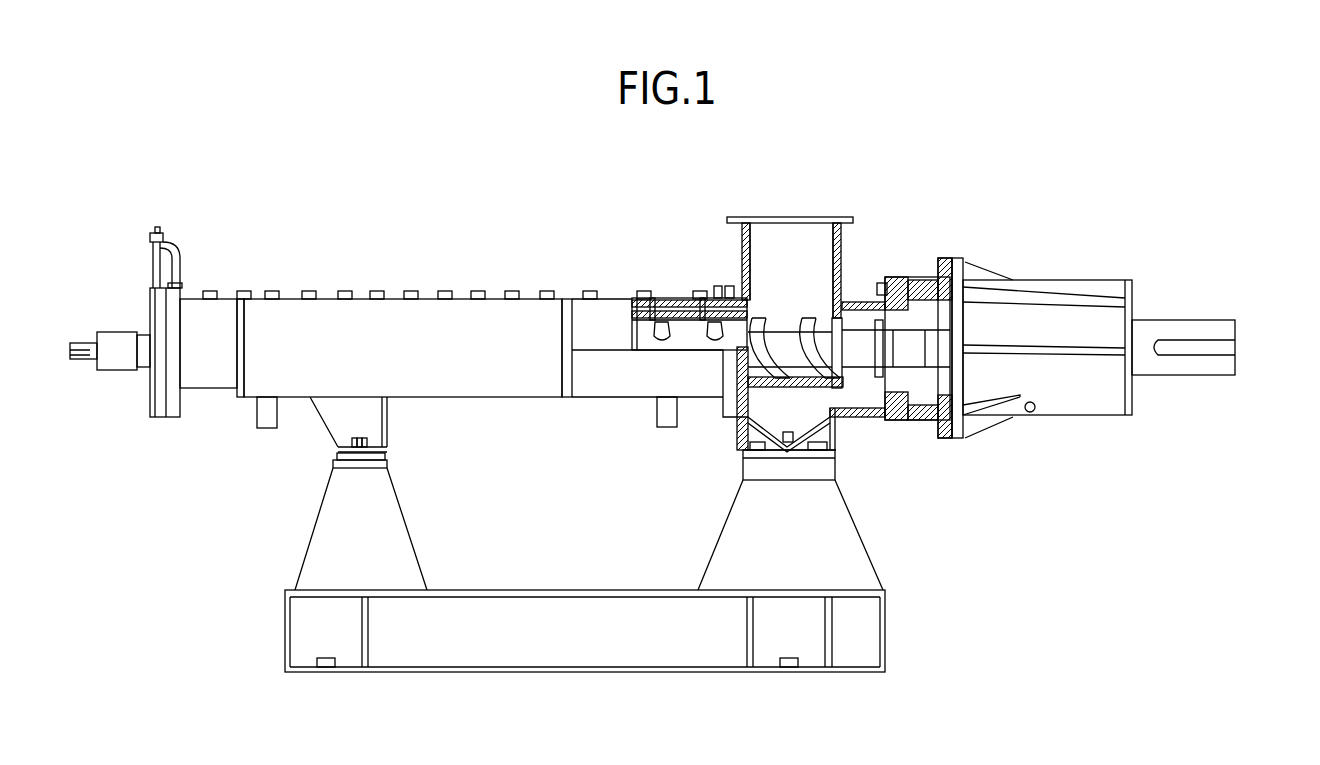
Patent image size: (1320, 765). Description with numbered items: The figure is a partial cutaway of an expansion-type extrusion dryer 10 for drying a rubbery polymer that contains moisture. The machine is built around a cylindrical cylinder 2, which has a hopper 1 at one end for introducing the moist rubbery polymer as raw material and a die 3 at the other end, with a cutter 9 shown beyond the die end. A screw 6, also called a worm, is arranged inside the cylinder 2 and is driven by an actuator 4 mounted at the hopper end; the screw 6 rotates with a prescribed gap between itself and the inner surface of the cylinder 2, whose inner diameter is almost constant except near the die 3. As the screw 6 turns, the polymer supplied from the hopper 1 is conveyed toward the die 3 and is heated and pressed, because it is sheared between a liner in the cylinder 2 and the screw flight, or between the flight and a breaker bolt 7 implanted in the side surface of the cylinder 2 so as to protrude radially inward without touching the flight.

The extrusion dryer 10 is at (1243, 223).
The hopper 1 is at (785, 218).
The cylinder 2 is at (603, 397).
The die 3 is at (150, 403).
The actuator 4 is at (1095, 280).
The screw 6 is at (663, 328).
The breaker bolt 7 is at (480, 292).
The cutter 9 is at (112, 332).